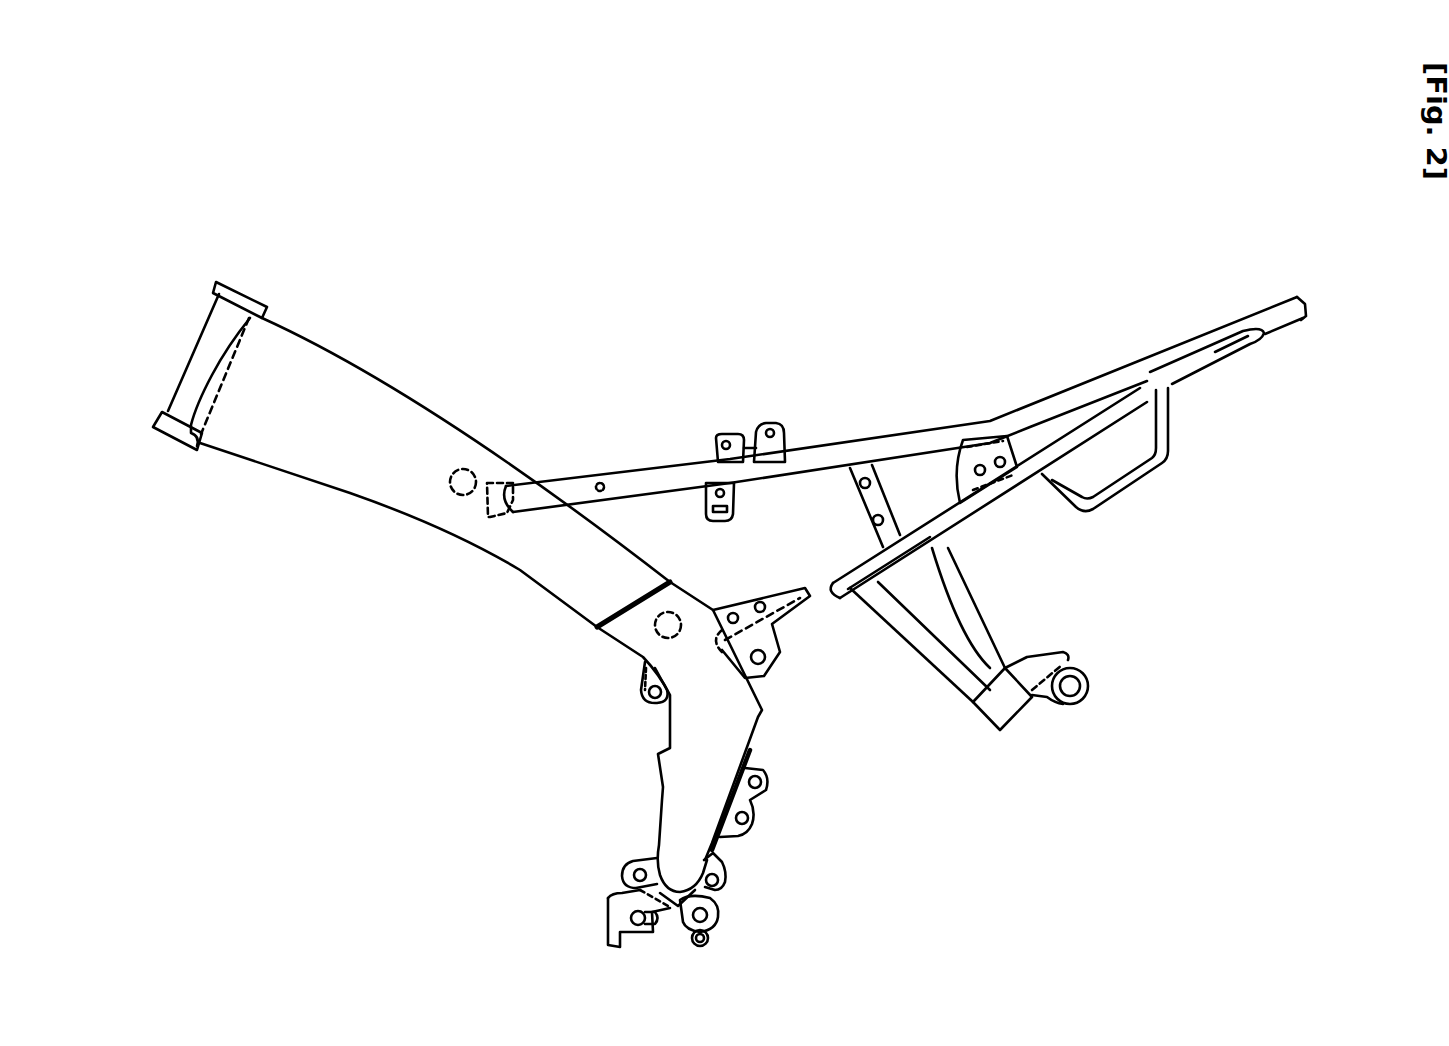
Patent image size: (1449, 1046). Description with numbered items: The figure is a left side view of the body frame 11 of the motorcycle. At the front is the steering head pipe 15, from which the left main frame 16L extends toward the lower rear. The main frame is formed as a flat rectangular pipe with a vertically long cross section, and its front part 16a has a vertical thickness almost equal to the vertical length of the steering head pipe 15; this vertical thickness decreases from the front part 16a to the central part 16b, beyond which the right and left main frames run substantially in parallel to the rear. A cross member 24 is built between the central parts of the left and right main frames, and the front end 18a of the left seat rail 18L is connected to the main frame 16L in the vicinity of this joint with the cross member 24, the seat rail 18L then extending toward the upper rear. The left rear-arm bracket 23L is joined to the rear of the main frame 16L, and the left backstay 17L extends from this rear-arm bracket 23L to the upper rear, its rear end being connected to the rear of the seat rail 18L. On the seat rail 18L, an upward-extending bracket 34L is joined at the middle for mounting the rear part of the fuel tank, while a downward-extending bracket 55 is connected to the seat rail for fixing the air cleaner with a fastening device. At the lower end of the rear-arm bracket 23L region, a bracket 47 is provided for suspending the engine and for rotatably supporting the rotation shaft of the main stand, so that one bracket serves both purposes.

The body frame 11 is at (741, 305).
The steering head pipe 15 is at (185, 369).
The left main frame 16L is at (367, 404).
The front part 16a is at (267, 435).
The central part 16b is at (397, 493).
The left backstay 17L is at (985, 511).
The left seat rail 18L is at (672, 468).
The front end 18a is at (503, 505).
The left rear-arm bracket 23L is at (688, 752).
The cross member 24 is at (467, 468).
The left bracket 34L is at (770, 427).
The bracket 47 is at (717, 912).
The bracket 55 is at (738, 497).